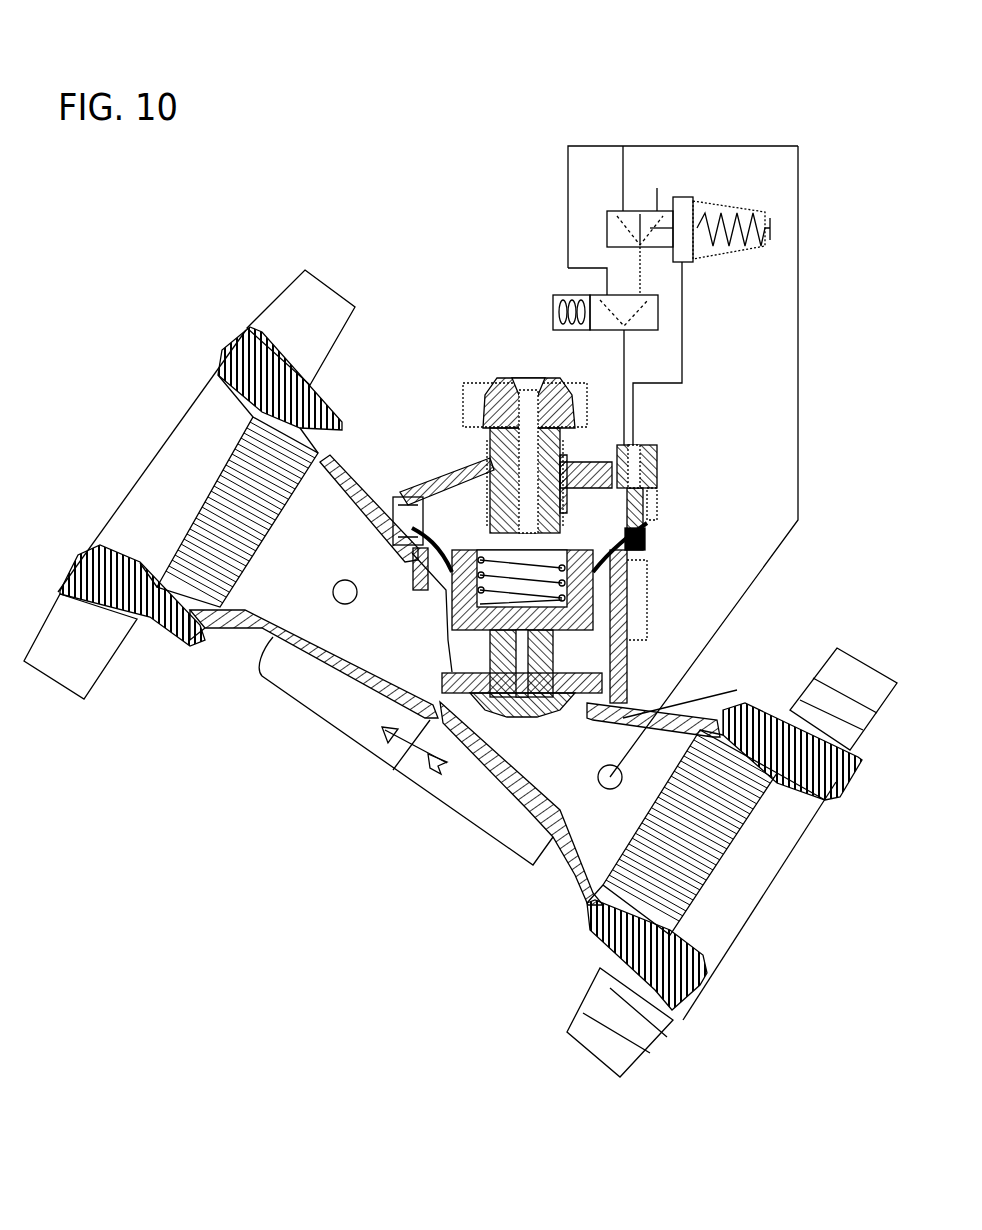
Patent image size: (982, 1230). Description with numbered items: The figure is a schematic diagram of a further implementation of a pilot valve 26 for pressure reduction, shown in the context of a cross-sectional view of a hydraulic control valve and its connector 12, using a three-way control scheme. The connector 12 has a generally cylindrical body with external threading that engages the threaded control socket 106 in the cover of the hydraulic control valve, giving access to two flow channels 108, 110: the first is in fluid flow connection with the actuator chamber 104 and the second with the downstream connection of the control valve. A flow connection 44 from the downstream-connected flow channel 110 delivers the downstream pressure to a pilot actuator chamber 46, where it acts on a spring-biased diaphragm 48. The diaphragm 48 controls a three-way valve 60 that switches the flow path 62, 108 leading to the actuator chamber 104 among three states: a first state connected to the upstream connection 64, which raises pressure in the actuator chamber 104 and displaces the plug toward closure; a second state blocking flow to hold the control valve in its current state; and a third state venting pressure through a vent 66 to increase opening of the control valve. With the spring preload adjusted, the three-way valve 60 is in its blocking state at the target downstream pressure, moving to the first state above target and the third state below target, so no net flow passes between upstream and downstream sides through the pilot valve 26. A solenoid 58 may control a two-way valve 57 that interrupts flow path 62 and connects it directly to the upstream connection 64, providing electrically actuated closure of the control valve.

The connector 12 is at (655, 455).
The pilot valve 26 is at (565, 113).
The flow connection 44 is at (633, 413).
The pilot actuator chamber 46 is at (683, 197).
The spring-biased diaphragm 48 is at (697, 205).
The two-way valve 57 is at (593, 295).
The solenoid 58 is at (553, 300).
The three-way valve 60 is at (637, 210).
The flow path 62 is at (623, 365).
The upstream connection 64 is at (798, 243).
The vent 66 is at (660, 172).
The actuator chamber 104 is at (467, 490).
The threaded control socket 106 is at (657, 478).
The flow channel 108 is at (610, 485).
The flow channel 110 is at (655, 540).